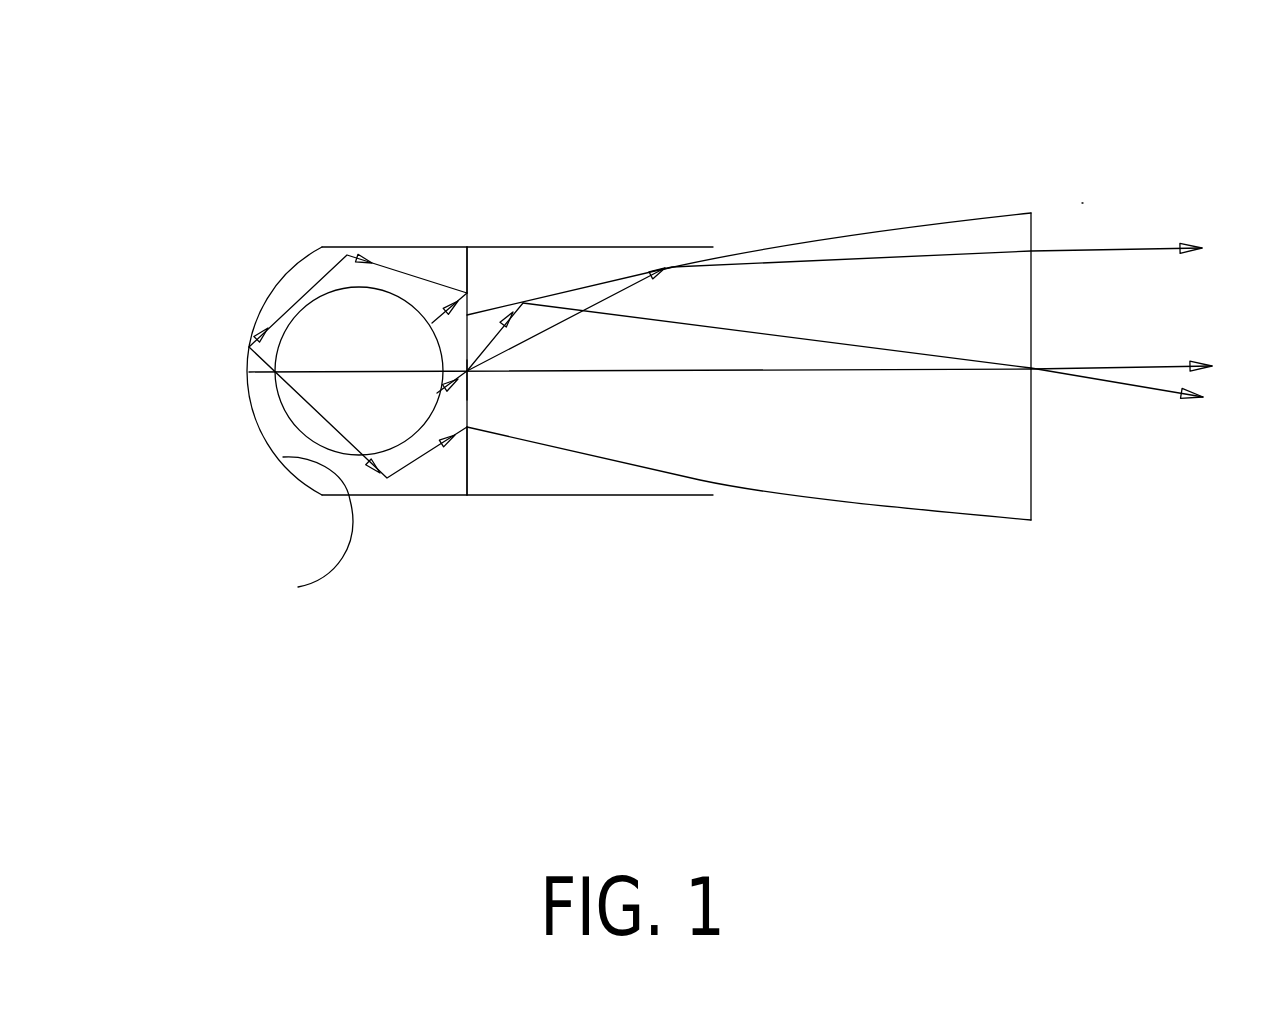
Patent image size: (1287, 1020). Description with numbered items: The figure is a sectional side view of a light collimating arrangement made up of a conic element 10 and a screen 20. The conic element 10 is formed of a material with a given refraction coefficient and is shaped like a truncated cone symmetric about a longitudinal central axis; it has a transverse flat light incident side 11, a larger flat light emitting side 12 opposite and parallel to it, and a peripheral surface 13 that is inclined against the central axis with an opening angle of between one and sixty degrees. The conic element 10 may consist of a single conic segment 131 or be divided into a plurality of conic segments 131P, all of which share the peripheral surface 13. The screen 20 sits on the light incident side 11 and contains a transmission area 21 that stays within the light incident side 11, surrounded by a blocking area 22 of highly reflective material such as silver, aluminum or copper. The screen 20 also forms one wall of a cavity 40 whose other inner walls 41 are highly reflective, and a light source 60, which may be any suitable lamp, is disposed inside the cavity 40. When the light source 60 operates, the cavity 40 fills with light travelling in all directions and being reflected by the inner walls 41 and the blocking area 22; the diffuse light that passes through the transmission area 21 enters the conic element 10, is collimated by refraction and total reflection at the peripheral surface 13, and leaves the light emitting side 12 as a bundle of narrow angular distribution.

The conic element 10 is at (1045, 482).
The light incident side 11 is at (467, 397).
The light emitting side 12 is at (1042, 303).
The peripheral surface 13 is at (1082, 203).
The conic segment 131 is at (573, 288).
The conic segments 131P is at (928, 226).
The screen 20 is at (455, 524).
The transmission area 21 is at (433, 297).
The blocking area 22 is at (465, 292).
The cavity 40 is at (242, 308).
The inner walls 41 is at (308, 539).
The light source 60 is at (284, 408).